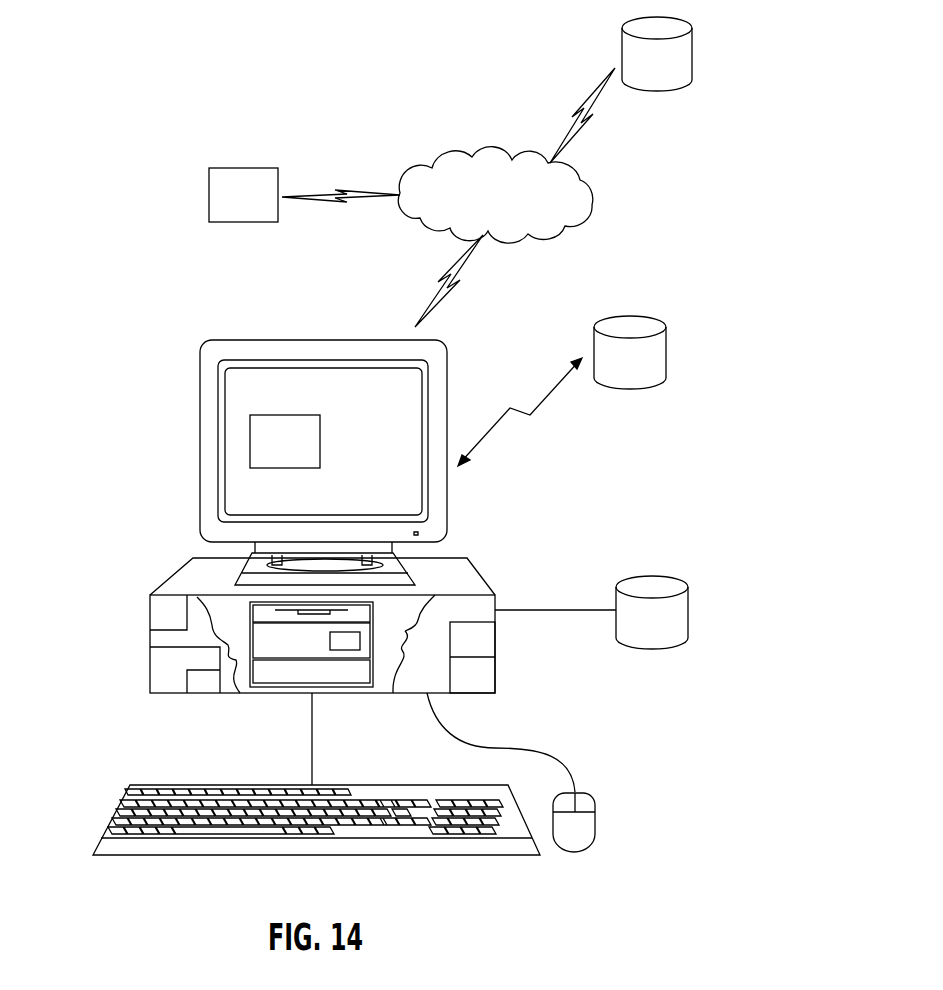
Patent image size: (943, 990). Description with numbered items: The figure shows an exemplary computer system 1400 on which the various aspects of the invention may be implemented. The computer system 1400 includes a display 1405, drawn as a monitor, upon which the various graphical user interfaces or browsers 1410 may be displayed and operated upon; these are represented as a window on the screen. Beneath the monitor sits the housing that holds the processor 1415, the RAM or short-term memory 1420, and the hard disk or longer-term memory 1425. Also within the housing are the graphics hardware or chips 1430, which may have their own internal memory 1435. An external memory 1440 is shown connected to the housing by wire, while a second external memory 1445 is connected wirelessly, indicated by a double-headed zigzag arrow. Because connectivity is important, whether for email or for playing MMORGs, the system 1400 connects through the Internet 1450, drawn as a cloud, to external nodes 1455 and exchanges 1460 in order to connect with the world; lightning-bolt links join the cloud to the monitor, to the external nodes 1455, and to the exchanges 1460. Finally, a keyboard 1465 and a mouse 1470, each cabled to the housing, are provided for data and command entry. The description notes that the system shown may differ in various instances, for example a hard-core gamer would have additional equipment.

The computer system 1400 is at (150, 29).
The display 1405 is at (200, 483).
The graphical user interfaces or browsers 1410 is at (248, 443).
The processor 1415 is at (488, 670).
The RAM or short-term memory 1420 is at (483, 650).
The hard disk or longer-term memory 1425 is at (162, 618).
The graphics hardware or chips 1430 is at (163, 677).
The internal memory 1435 is at (208, 687).
The external memory connected by wire 1440 is at (688, 610).
The external memory connected wirelessly 1445 is at (666, 350).
The Internet 1450 is at (577, 217).
The external nodes 1455 is at (693, 53).
The exchanges 1460 is at (209, 197).
The keyboard 1465 is at (415, 855).
The mouse 1470 is at (597, 823).